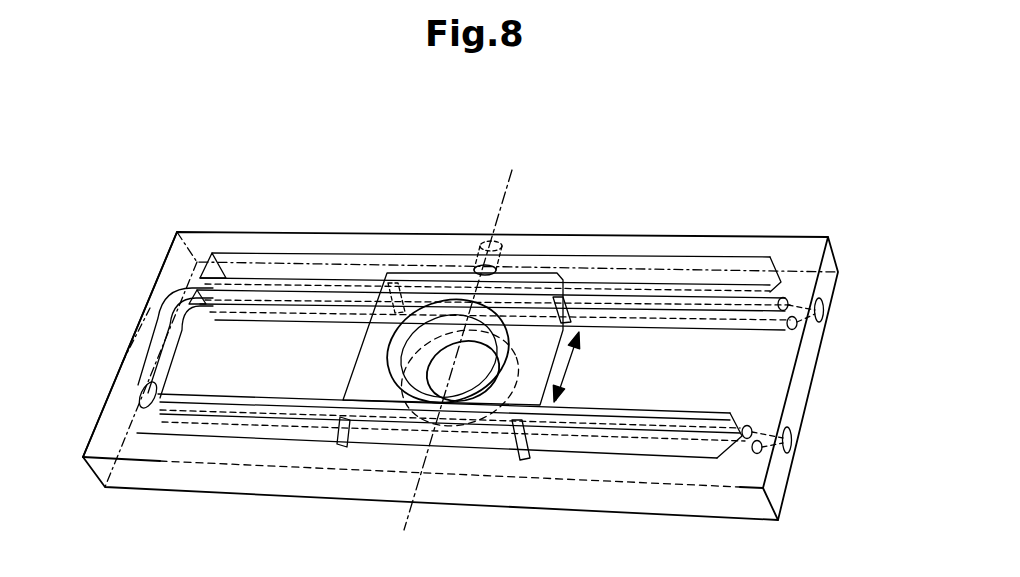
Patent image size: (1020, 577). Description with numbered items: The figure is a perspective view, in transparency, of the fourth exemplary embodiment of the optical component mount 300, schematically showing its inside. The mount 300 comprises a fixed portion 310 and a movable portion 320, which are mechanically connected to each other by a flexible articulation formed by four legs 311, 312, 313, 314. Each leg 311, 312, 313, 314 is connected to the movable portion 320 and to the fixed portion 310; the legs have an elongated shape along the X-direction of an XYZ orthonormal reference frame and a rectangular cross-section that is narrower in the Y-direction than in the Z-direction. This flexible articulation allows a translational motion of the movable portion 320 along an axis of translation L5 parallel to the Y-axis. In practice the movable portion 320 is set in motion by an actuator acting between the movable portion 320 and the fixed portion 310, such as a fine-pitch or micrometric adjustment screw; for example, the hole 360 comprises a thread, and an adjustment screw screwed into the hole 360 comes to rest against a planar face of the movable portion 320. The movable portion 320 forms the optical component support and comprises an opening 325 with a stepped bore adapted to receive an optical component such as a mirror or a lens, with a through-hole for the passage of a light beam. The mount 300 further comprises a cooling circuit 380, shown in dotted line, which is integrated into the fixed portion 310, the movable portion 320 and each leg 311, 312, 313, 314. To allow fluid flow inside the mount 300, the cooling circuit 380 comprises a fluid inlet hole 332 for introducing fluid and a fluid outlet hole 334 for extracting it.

The optical component mount 300 is at (786, 206).
The fixed portion 310 is at (668, 245).
The leg 311 is at (658, 330).
The leg 312 is at (267, 318).
The leg 313 is at (215, 392).
The leg 314 is at (612, 405).
The movable portion 320 is at (432, 272).
The opening 325 is at (436, 375).
The fluid inlet hole 332 is at (824, 312).
The fluid outlet hole 334 is at (792, 442).
The hole 360 is at (495, 245).
The cooling circuit 380 is at (155, 357).
The axis of translation L5 is at (505, 192).